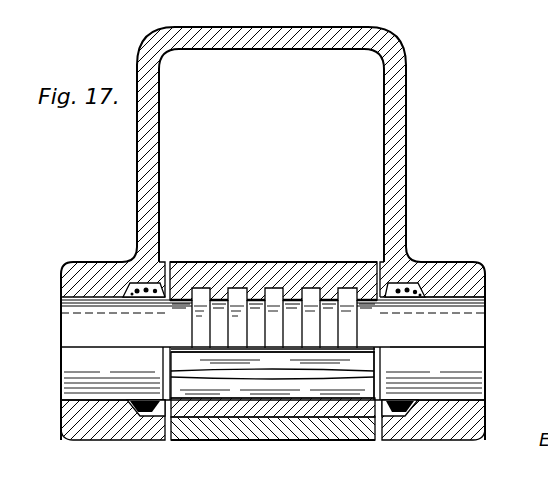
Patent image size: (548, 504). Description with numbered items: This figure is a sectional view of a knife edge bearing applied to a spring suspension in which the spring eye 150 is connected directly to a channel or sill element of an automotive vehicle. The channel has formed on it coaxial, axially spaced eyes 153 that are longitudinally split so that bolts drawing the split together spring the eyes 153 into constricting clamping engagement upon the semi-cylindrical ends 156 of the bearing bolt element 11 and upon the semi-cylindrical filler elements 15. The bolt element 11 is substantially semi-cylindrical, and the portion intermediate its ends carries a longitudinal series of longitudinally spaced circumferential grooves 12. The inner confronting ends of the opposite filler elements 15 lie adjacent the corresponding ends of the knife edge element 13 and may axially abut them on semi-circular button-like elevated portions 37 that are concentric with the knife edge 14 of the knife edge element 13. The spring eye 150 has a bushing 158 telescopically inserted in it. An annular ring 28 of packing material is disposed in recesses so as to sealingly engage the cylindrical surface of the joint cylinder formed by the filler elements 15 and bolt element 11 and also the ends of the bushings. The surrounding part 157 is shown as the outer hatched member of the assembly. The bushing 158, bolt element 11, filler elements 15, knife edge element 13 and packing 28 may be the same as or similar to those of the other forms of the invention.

The handle 157 is at (398, 108).
The eyes 153 is at (86, 268).
The spring eye 150 is at (265, 264).
The semi-cylindrical ends 156 is at (78, 330).
The bolt element 11 is at (470, 338).
The circumferential grooves 12 is at (303, 318).
The button-like elevated portions 37 is at (170, 352).
The filler elements 15 is at (72, 383).
The knife edge 14 is at (236, 362).
The knife edge element 13 is at (322, 392).
The bushing 158 is at (282, 401).
The annular ring of packing material 28 is at (147, 420).